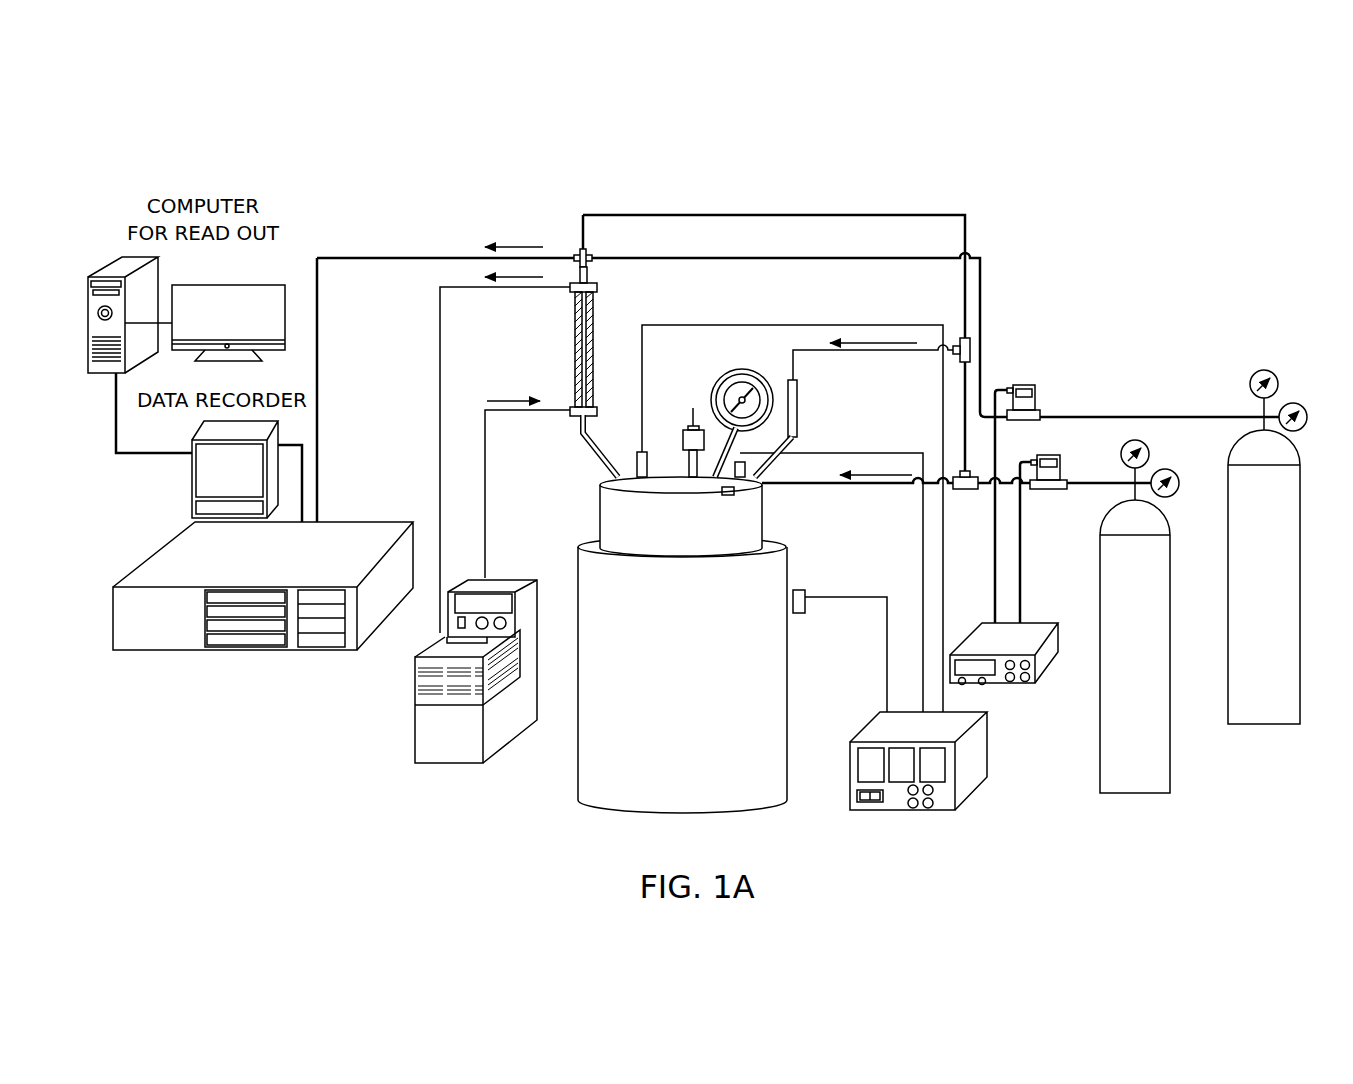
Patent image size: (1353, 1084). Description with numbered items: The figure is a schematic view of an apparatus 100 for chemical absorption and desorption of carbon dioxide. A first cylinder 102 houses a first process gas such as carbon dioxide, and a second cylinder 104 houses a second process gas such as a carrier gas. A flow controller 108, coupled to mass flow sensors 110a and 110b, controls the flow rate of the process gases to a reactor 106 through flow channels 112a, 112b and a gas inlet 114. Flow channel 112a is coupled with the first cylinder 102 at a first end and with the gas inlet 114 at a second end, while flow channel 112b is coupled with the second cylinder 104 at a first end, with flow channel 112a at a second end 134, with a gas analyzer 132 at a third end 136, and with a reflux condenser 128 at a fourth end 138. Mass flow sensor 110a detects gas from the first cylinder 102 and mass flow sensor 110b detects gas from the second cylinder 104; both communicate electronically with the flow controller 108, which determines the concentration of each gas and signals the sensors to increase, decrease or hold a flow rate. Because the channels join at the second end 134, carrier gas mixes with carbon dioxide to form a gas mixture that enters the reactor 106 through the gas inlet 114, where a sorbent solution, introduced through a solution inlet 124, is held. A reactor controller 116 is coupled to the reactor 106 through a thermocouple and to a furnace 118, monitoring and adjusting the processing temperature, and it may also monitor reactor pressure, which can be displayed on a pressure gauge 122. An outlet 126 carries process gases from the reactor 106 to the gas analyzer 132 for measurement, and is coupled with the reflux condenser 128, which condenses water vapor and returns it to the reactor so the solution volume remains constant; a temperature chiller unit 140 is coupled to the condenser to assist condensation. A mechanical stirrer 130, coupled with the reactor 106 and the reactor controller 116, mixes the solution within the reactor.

The apparatus 100 is at (232, 112).
The first cylinder 102 is at (1114, 598).
The second cylinder 104 is at (1246, 525).
The reactor 106 is at (662, 535).
The flow controller 108 is at (986, 650).
The mass flow sensor 110a is at (1052, 455).
The mass flow sensor 110b is at (1024, 383).
The flow channel 112a is at (1087, 492).
The flow channel 112b is at (338, 247).
The gas inlet 114 is at (740, 498).
The reactor controller 116 is at (898, 740).
The furnace 118 is at (662, 717).
The pressure gauge 122 is at (767, 377).
The solution inlet 124 is at (778, 470).
The outlet 126 is at (598, 479).
The reflux condenser 128 is at (567, 340).
The mechanical stirrer 130 is at (693, 400).
The gas analyzer 132 is at (137, 630).
The second end 134 is at (968, 494).
The third end 136 is at (324, 517).
The fourth end 138 is at (596, 281).
The temperature chiller unit 140 is at (424, 747).